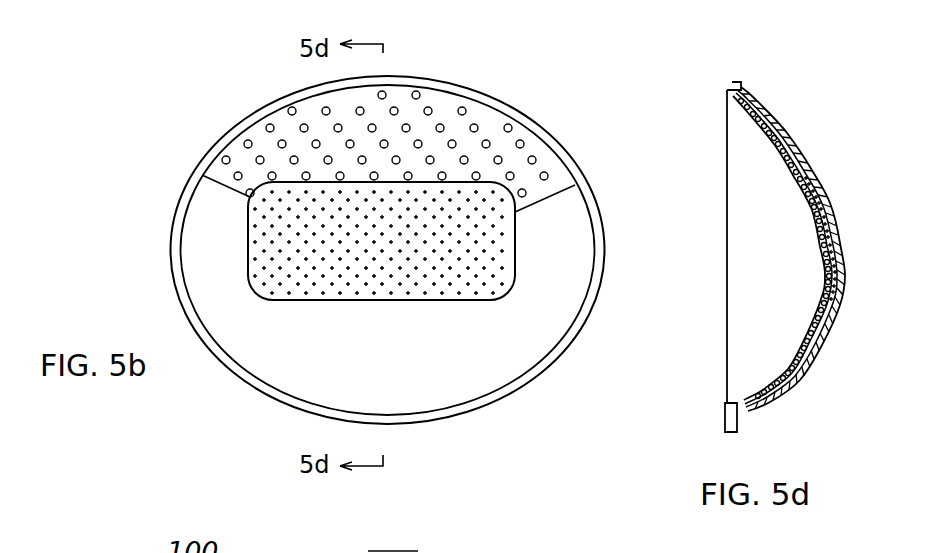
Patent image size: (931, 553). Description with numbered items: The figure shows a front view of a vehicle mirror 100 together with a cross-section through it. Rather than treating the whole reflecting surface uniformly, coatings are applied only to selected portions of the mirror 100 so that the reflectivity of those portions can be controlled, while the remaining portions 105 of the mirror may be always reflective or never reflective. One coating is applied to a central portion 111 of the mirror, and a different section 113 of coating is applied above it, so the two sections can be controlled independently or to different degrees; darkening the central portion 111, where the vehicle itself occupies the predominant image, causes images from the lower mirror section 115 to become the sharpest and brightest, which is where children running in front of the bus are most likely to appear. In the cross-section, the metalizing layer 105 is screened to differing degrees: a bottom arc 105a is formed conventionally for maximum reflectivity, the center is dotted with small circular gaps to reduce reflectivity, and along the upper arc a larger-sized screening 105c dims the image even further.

In FIG. 5b, the mirror 100 is at (492, 98).
In FIG. 5d, the mirror 100 is at (780, 115).
In FIG. 5b, the remaining portions of the mirror / metalizing layer 105 is at (522, 148).
In FIG. 5d, the remaining portions of the mirror / metalizing layer 105 is at (783, 145).
In FIG. 5b, the section of metalizing layer 105a is at (520, 343).
In FIG. 5d, the larger-sized screening 105c is at (738, 104).
In FIG. 5b, the central portion 111 is at (272, 247).
In FIG. 5d, the central portion 111 is at (823, 265).
In FIG. 5b, the section of coating 113 is at (290, 118).
In FIG. 5d, the section of coating 113 is at (786, 150).
In FIG. 5b, the mirror section 115 is at (438, 395).